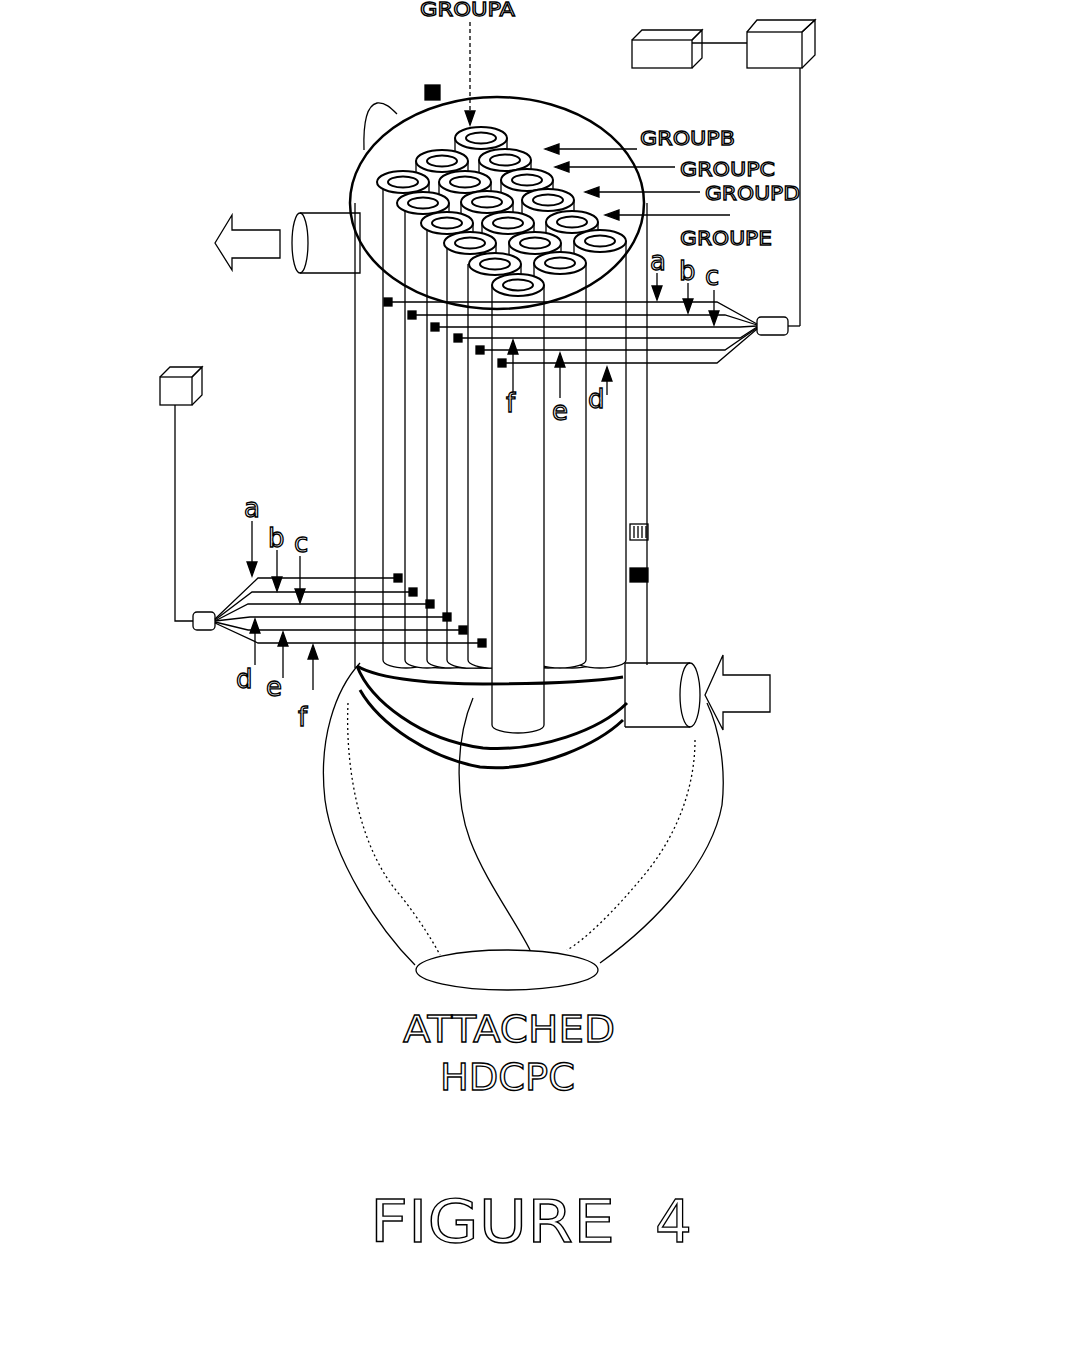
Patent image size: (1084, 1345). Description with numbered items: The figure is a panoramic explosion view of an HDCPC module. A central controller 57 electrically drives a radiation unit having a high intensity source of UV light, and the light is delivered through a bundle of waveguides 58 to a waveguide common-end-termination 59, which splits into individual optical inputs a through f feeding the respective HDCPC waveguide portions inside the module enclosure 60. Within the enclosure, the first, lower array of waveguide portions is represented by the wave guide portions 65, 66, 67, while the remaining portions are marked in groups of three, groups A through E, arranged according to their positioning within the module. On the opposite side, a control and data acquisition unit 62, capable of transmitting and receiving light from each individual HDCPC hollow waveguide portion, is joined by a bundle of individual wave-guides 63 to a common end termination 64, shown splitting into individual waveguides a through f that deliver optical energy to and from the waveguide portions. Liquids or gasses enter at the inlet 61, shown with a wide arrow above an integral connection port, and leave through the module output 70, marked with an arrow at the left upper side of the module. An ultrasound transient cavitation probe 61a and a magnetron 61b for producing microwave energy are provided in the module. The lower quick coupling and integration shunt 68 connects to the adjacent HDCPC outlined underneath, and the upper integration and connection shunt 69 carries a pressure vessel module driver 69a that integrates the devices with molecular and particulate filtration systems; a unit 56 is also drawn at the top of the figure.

The controller 56 is at (836, 35).
The central controller 57 is at (618, 58).
The bundle of waveguides 58 is at (819, 218).
The waveguide common-end-termination 59 is at (780, 359).
The module enclosure 60 is at (341, 462).
The inlet 61 is at (682, 641).
The ultrasound transient cavitation probe 61a is at (668, 567).
The magnetron 61b is at (660, 538).
The control and data acquisition unit 62 is at (146, 392).
The bundle of individual wave-guides 63 is at (161, 555).
The common end termination 64 is at (203, 659).
The wave guide portion 65 is at (614, 422).
The wave guide portion 66 is at (579, 452).
The wave guide portion 67 is at (534, 475).
The lower quick coupling and integration shunt 68 is at (371, 697).
The upper integration and connection shunt 69 is at (382, 81).
The pressure vessel module driver 69a is at (423, 72).
The module output 70 is at (315, 191).